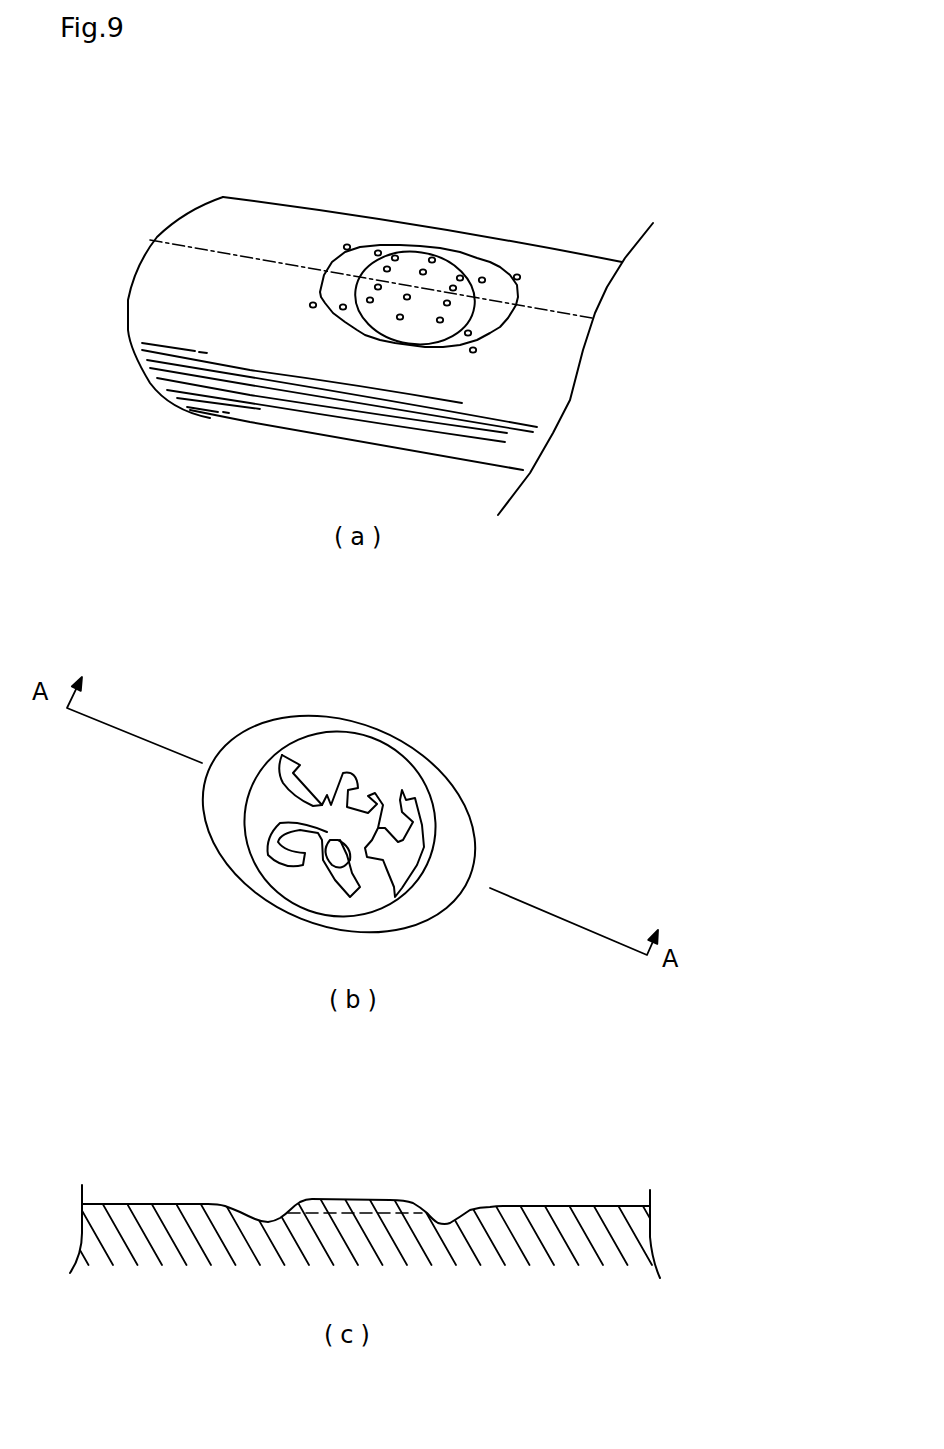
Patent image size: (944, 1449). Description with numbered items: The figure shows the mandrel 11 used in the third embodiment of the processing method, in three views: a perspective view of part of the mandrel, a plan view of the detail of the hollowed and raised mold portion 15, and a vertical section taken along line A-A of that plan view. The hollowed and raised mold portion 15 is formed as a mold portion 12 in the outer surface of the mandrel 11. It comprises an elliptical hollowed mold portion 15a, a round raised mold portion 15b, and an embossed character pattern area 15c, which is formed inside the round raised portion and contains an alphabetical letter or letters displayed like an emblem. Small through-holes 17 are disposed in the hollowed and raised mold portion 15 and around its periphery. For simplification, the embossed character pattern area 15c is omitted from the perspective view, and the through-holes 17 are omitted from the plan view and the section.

The mandrel 11 is at (137, 198).
The mold portion 12 is at (473, 244).
The hollowed and raised mold portion 15 is at (398, 526).
The elliptical hollowed mold portion 15a is at (489, 284).
The round raised mold portion 15b is at (423, 273).
The embossed character pattern area 15c is at (360, 848).
The small through-holes 17 is at (395, 255).